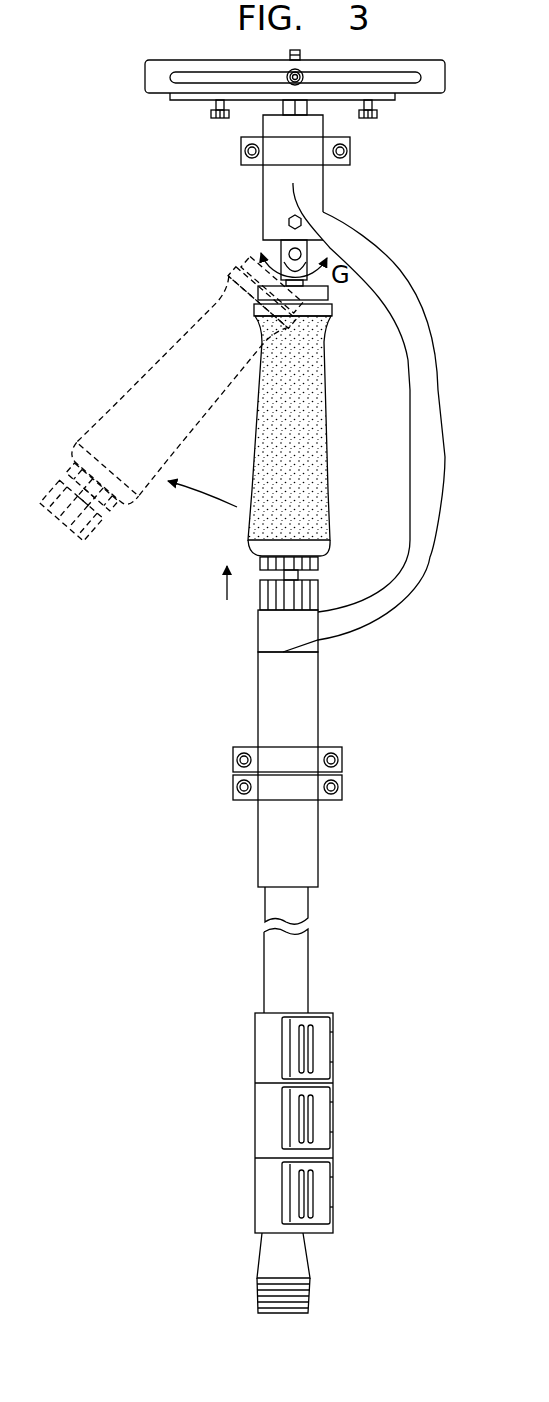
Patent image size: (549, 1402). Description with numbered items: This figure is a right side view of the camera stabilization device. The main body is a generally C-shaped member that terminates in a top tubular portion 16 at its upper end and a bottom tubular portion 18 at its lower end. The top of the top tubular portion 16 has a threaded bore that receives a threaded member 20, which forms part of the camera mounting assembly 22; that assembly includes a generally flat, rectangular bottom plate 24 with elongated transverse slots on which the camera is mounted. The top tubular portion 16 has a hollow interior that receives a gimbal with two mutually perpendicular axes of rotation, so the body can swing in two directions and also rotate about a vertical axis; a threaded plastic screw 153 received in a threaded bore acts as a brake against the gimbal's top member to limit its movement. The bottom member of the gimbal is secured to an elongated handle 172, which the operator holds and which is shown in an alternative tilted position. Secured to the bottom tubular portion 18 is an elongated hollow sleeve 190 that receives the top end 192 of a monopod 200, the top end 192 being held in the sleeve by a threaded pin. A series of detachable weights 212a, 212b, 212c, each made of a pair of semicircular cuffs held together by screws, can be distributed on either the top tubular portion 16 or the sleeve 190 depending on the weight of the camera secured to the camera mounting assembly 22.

The camera mounting assembly 22 is at (414, 52).
The bottom plate 24 is at (186, 100).
The threaded member 20 is at (300, 113).
The detachable weight 212a is at (258, 156).
The top tubular portion 16 is at (318, 191).
The threaded plastic screw 153 is at (288, 222).
The elongated handle 172 is at (143, 385).
The bottom tubular portion 18 is at (265, 631).
The elongated hollow sleeve 190 is at (302, 693).
The detachable weight 212b is at (312, 759).
The detachable weight 212c is at (313, 789).
The top end of monopod 192 is at (298, 906).
The monopod 200 is at (324, 967).